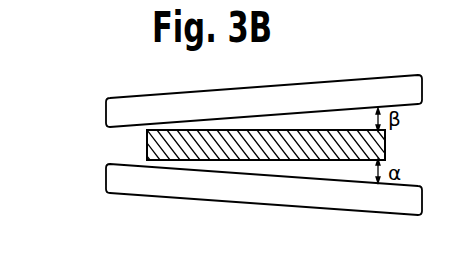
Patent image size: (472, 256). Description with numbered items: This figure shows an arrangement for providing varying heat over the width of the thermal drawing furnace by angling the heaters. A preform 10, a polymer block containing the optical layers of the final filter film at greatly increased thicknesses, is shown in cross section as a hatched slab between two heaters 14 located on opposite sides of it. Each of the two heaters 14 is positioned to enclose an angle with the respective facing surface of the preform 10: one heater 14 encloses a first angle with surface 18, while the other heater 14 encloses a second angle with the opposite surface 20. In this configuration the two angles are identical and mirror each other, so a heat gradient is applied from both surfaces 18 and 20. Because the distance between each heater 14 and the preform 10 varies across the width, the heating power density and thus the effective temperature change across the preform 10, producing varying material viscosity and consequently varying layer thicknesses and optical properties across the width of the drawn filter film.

The preform 10 is at (153, 148).
The heaters 14 is at (113, 110).
The surface 18 is at (260, 160).
The surface 20 is at (277, 130).